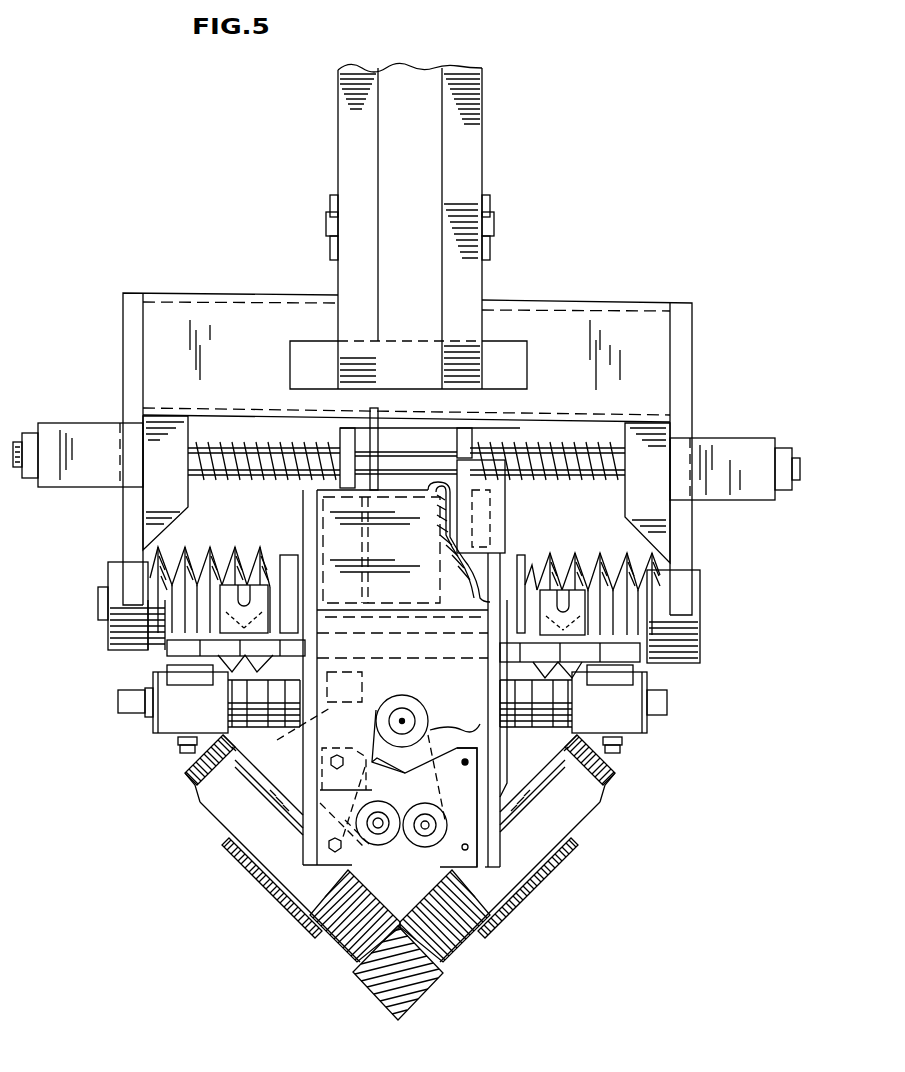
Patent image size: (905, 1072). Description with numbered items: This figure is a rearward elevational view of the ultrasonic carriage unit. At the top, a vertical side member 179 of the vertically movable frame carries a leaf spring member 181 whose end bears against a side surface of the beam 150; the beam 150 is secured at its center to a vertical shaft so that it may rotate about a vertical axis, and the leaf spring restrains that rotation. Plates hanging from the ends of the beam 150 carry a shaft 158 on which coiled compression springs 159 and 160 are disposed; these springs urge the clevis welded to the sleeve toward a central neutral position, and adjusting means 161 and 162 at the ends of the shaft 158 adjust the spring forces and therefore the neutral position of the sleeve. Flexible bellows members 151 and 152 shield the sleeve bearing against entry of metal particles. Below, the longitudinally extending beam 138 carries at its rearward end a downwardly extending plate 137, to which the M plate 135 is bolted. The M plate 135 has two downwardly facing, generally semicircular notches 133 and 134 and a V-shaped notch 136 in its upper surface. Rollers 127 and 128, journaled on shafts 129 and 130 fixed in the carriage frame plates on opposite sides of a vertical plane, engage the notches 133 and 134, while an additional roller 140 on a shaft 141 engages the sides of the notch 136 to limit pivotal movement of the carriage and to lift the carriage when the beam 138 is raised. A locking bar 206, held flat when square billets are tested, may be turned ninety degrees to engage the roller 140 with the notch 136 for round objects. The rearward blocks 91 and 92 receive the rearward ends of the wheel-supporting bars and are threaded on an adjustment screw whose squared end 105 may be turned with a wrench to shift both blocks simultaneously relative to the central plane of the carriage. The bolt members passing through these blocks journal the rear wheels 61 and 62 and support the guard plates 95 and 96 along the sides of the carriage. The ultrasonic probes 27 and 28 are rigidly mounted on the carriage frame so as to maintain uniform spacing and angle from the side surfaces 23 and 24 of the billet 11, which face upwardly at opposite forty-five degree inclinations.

The vertical side member 179 is at (470, 174).
The leaf spring member 181 is at (506, 346).
The beam 150 is at (598, 320).
The adjusting means 161 is at (72, 421).
The adjusting means 162 is at (718, 437).
The shaft 158 is at (243, 448).
The coiled compression spring 159 is at (240, 480).
The coiled compression spring 160 is at (572, 482).
The flexible bellows member 151 is at (216, 556).
The flexible bellows member 152 is at (598, 572).
The locking bar 206 is at (533, 577).
The squared end 105 is at (125, 708).
The block 91 is at (300, 768).
The block 92 is at (501, 752).
The longitudinally extending beam 138 is at (455, 515).
The plate 137 is at (287, 731).
The shaft 141 is at (406, 718).
The roller 140 is at (414, 728).
The M plate 135 is at (424, 768).
The V-shaped notch 136 is at (370, 763).
The semi-circular notch 133 is at (392, 800).
The semi-circular notch 134 is at (441, 813).
The roller 127 is at (352, 866).
The shaft 129 is at (400, 846).
The roller 128 is at (419, 848).
The shaft 130 is at (460, 854).
The ultrasonic probe 27 is at (190, 788).
The ultrasonic probe 28 is at (622, 790).
The side surface 23 is at (353, 962).
The side surface 24 is at (448, 962).
The rear wheel 61 is at (293, 878).
The rear wheel 62 is at (528, 868).
The guard plate 95 is at (242, 868).
The guard plate 96 is at (562, 864).
The die block 11 is at (413, 1007).